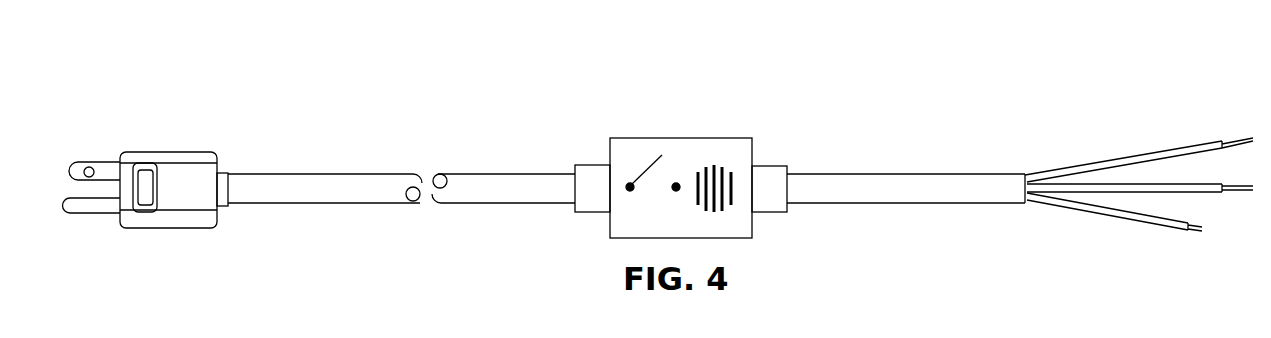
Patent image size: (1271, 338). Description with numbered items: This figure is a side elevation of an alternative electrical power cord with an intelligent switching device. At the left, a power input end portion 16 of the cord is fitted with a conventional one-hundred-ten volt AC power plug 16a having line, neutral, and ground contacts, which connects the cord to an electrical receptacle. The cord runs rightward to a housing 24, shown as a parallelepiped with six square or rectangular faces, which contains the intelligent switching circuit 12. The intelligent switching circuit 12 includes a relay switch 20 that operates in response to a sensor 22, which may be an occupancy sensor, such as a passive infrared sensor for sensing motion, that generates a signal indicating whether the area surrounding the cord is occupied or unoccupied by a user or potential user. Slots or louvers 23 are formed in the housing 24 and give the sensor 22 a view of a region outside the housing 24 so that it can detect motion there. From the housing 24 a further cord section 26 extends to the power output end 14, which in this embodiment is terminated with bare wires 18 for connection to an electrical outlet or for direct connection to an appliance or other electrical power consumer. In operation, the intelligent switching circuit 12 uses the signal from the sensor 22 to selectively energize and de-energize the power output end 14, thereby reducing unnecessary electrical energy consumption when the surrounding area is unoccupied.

The power output end 14 is at (1020, 146).
The power input end portion 16 is at (288, 150).
The power plug 16a is at (182, 155).
The intelligent switching circuit 12 is at (685, 163).
The relay switch 20 is at (633, 156).
The housing 24 is at (681, 137).
The slots or louvers 23 is at (732, 172).
The sensor 22 is at (732, 212).
The cord 26 is at (953, 175).
The bare wires 18 is at (1160, 183).